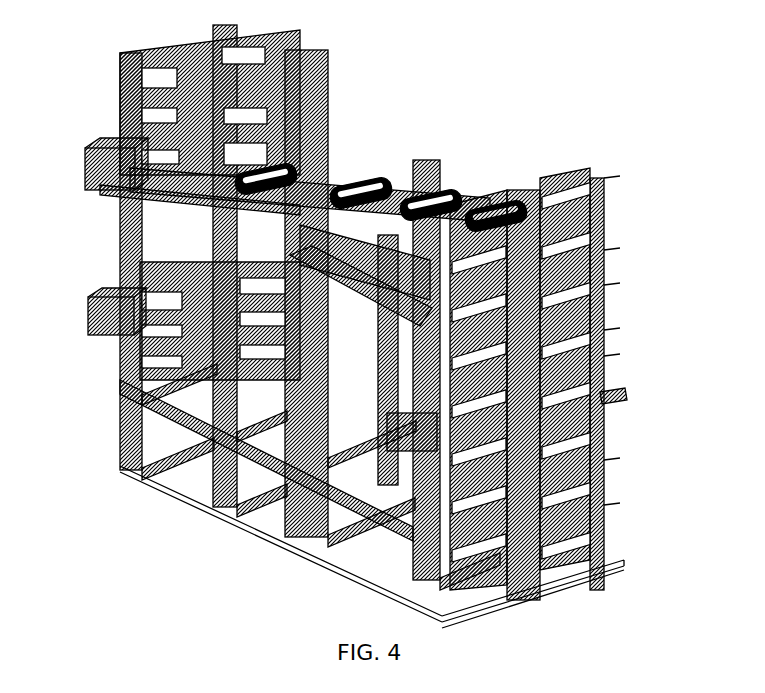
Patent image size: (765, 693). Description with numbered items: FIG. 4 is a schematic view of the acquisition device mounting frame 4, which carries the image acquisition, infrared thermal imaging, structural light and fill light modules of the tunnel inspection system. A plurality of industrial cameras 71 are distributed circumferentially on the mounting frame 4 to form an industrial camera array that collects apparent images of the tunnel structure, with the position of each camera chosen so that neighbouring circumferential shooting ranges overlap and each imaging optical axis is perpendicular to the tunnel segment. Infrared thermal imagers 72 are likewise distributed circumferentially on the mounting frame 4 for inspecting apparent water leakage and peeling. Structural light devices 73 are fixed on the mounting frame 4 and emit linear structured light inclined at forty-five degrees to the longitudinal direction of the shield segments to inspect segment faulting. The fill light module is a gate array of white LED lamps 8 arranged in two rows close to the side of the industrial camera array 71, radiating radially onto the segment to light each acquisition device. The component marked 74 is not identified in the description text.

The acquisition device mounting frame 4 is at (117, 452).
The white LED lamp 8 is at (418, 187).
The industrial camera 71 is at (520, 197).
The infrared thermal imager 72 is at (115, 193).
The structural light device 73 is at (613, 398).
The drive motor 74 is at (107, 150).